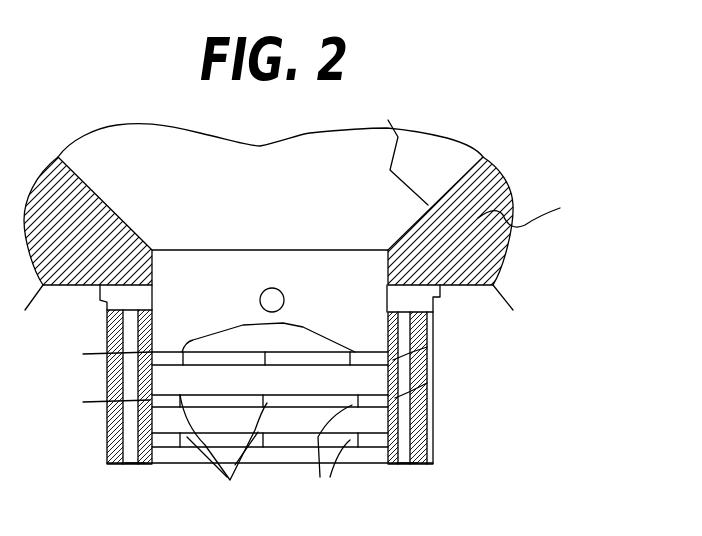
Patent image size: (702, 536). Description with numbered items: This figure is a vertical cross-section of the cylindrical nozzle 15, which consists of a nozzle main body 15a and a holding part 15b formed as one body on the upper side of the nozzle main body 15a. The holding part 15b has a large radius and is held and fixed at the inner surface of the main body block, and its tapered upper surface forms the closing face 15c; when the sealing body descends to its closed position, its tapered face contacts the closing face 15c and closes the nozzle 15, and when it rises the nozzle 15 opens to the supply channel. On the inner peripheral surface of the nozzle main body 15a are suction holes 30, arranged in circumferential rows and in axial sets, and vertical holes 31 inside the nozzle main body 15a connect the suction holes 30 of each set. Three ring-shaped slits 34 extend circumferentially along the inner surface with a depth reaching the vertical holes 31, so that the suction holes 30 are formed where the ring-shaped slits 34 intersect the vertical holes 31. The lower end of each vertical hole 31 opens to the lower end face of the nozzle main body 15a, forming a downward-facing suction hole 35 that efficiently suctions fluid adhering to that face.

The nozzle 15 is at (500, 148).
The nozzle main body 15a is at (427, 400).
The holding part 15b is at (536, 213).
The closing face 15c is at (391, 146).
The suction holes 30 is at (272, 288).
The vertical holes 31 is at (115, 418).
The ring-shaped slits 34 is at (170, 352).
The downward-facing suction hole 35 is at (133, 464).